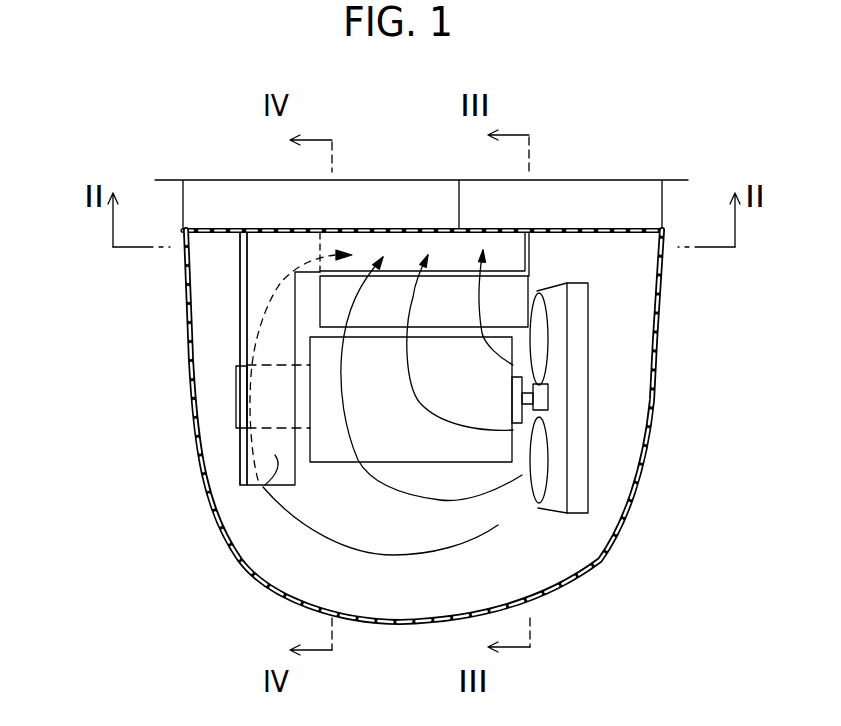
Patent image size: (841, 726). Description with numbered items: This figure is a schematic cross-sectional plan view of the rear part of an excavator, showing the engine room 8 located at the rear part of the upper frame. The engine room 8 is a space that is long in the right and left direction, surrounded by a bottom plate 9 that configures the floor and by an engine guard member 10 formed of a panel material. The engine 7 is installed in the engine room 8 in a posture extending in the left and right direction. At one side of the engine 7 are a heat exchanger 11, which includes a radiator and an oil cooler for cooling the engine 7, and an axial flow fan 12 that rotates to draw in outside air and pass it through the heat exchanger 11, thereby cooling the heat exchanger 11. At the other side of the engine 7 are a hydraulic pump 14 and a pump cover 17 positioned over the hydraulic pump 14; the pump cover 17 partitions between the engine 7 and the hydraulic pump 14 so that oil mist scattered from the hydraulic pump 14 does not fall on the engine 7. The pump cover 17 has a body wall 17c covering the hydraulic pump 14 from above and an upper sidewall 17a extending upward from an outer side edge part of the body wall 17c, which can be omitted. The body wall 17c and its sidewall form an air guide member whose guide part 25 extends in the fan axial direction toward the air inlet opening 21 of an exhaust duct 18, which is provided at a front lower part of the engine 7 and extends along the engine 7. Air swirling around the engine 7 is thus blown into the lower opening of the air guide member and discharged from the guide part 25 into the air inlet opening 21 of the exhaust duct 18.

The engine 7 is at (412, 463).
The engine room 8 is at (410, 600).
The bottom plate 9 is at (272, 548).
The engine guard member 10 is at (657, 389).
The heat exchanger 11 is at (588, 420).
The fan 12 is at (533, 487).
The hydraulic pump 14 is at (237, 398).
The pump cover 17 is at (226, 463).
The upper sidewall 17a is at (240, 310).
The body wall 17c is at (265, 485).
The exhaust duct 18 is at (548, 258).
The air inlet opening 21 is at (413, 242).
The guide part 25 is at (333, 235).